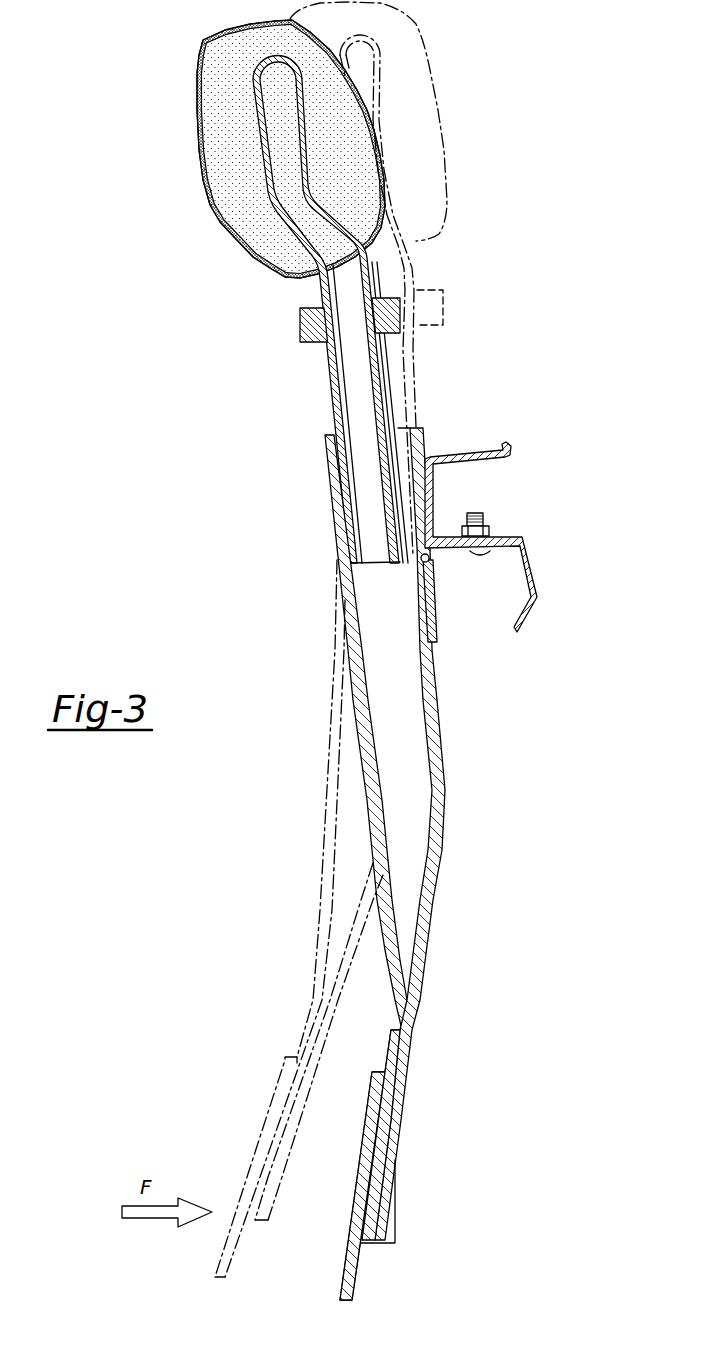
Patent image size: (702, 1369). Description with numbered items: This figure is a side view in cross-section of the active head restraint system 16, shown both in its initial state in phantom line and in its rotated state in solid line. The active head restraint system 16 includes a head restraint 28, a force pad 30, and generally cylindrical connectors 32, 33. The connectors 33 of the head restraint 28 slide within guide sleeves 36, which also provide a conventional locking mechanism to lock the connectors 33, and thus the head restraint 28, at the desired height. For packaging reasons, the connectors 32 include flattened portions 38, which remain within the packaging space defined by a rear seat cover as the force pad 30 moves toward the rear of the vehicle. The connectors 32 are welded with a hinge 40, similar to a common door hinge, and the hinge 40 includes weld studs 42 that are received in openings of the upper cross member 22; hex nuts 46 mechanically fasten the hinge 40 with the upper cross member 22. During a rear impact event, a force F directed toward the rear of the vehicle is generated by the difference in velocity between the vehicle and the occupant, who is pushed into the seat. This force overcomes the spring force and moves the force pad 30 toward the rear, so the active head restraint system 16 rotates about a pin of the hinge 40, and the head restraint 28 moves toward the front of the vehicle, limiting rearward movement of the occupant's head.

The active head restraint system 16 is at (172, 74).
The head restraint 28 is at (222, 167).
The connector 33 is at (327, 283).
The guide sleeve 36 is at (312, 325).
The upper cross member 22 is at (473, 452).
The weld stud 42 is at (476, 514).
The hex nut 46 is at (492, 531).
The hinge 40 is at (430, 607).
The connector 32 is at (432, 716).
The flattened portion 38 is at (392, 1140).
The force pad 30 is at (353, 1255).